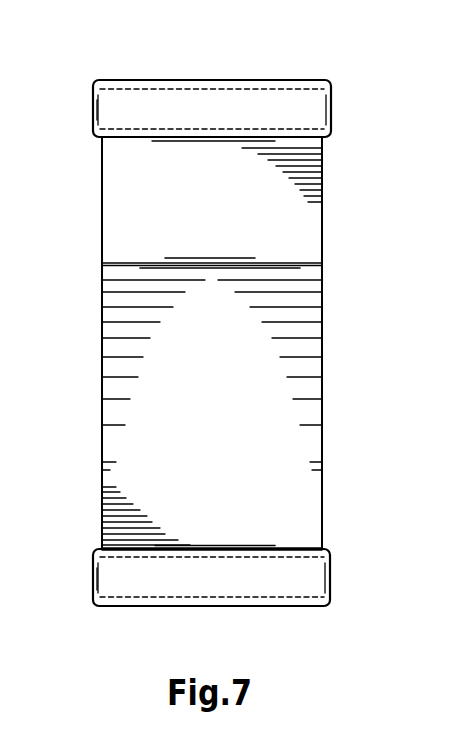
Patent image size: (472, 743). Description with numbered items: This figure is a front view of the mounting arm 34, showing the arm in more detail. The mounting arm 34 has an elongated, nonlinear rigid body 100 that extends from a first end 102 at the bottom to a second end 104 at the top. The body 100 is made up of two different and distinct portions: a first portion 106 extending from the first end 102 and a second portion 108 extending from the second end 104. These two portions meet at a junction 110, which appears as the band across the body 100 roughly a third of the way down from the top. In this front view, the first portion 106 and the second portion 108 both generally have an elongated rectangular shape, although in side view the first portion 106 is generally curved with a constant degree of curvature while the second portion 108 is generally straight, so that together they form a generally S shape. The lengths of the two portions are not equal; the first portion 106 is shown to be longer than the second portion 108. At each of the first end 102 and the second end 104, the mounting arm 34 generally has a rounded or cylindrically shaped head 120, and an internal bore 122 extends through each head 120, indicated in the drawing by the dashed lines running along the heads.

The mounting arm 34 is at (240, 337).
The body 100 is at (211, 343).
The first end 102 is at (343, 573).
The second end 104 is at (345, 108).
The first portion 106 is at (274, 448).
The second portion 108 is at (290, 228).
The junction 110 is at (127, 270).
The head 120 is at (105, 112).
The internal bore 122 is at (232, 110).